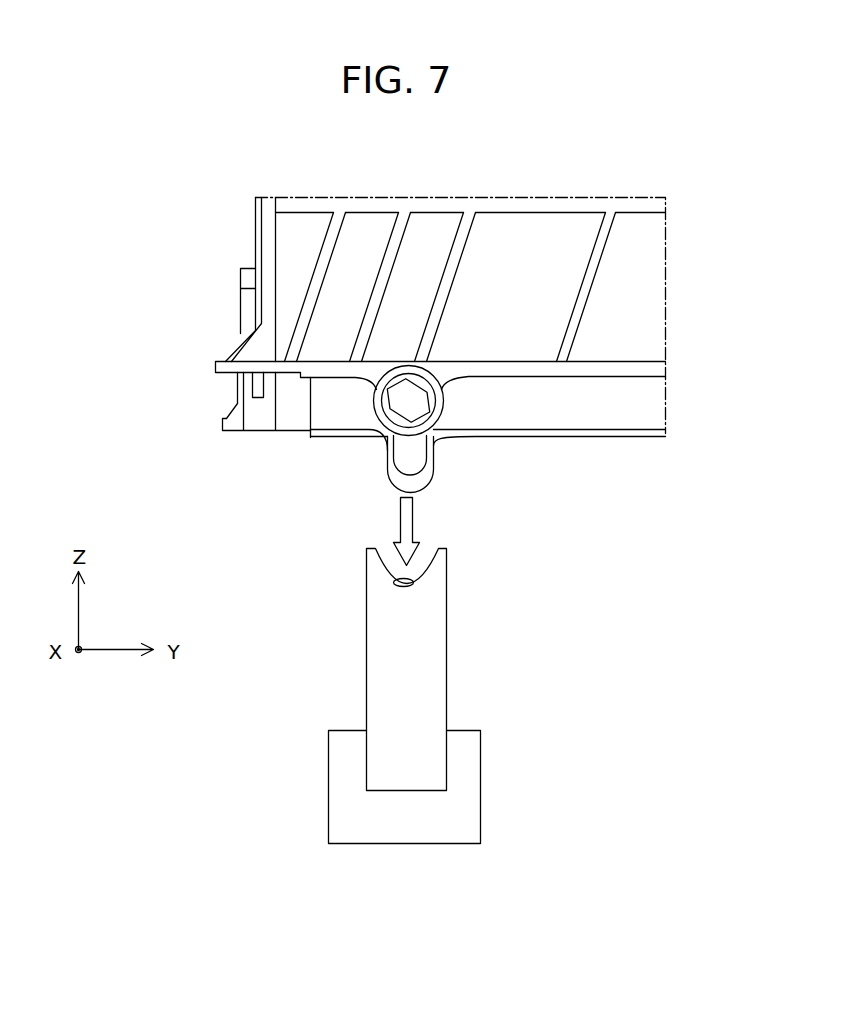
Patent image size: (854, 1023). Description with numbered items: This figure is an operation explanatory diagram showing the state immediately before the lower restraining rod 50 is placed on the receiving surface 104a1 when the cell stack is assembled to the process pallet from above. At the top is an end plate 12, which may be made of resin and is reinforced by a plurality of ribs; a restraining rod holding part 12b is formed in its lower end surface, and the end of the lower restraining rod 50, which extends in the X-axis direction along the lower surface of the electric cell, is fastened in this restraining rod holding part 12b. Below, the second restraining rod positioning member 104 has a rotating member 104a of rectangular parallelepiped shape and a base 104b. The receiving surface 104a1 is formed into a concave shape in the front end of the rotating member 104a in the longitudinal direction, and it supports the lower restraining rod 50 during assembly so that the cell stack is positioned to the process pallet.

The end plate 12 is at (640, 307).
The restraining rod holding part 12b is at (435, 467).
The lower restraining rod 50 is at (403, 455).
The second restraining rod positioning member 104 is at (433, 704).
The rotating member 104a is at (390, 670).
The receiving surface 104a1 is at (393, 583).
The base 104b is at (462, 808).